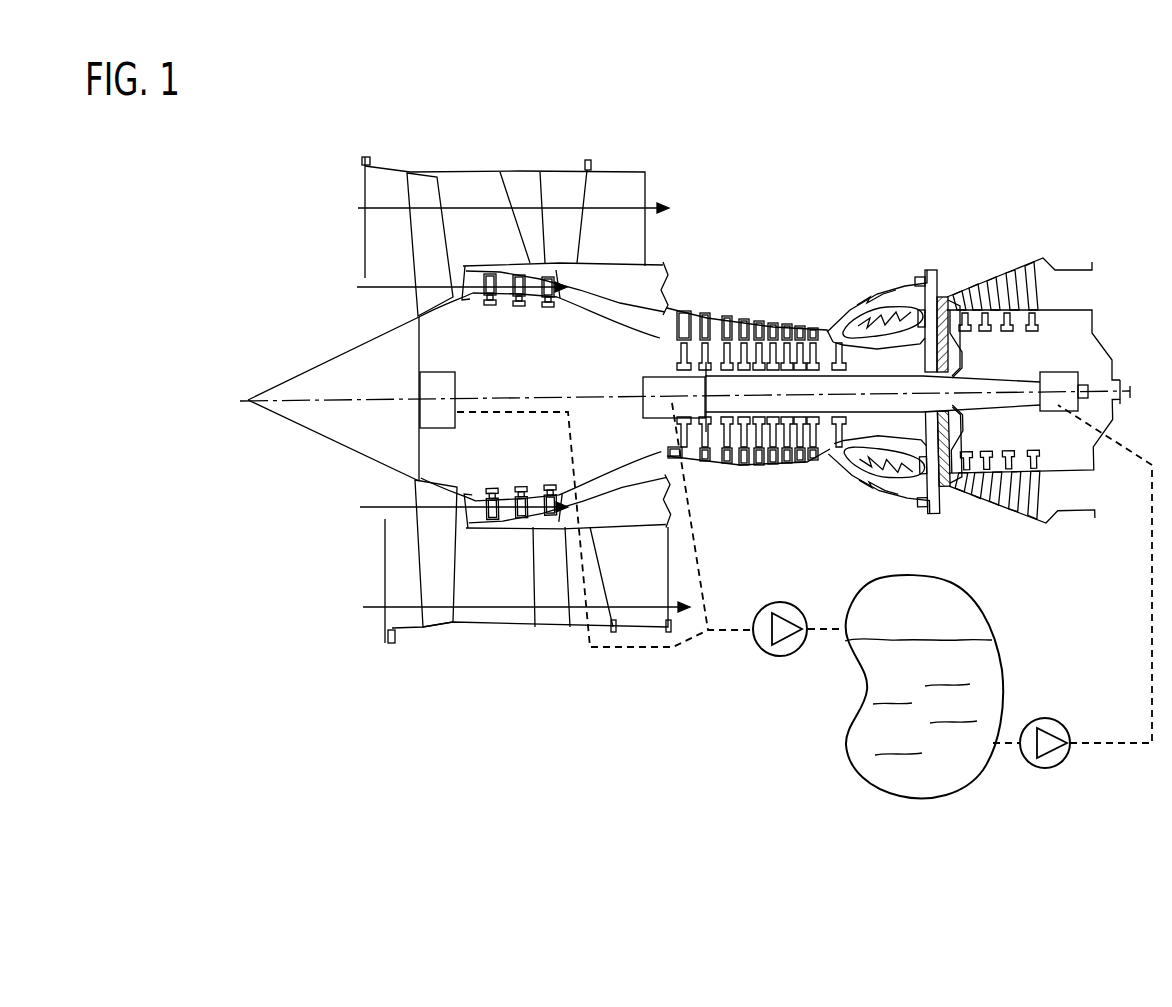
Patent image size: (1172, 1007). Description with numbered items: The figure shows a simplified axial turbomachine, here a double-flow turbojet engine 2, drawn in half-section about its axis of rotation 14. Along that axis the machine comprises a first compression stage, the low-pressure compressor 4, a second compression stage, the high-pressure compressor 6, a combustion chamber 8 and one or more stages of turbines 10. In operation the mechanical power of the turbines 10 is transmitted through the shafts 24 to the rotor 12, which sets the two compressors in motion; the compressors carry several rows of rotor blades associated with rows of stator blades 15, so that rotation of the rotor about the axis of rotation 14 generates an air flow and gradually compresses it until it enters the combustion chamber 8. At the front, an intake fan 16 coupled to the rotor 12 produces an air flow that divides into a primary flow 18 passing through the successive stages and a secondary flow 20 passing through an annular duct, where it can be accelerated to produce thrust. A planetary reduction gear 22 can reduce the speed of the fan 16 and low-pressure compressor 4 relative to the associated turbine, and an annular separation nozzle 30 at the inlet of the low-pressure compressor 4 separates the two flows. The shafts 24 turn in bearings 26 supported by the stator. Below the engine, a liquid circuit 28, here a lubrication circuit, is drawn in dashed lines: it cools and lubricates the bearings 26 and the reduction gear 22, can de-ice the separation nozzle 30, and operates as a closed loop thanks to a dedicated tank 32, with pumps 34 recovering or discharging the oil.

The turbojet engine 2 is at (822, 140).
The low-pressure compressor 4 is at (489, 303).
The high-pressure compressor 6 is at (730, 331).
The combustion chamber 8 is at (897, 290).
The turbines 10 is at (1013, 288).
The rotor 12 is at (963, 378).
The axis of rotation 14 is at (553, 397).
The stator blades 15 is at (531, 276).
The intake fan 16 is at (422, 196).
The primary flow 18 is at (448, 398).
The secondary flow 20 is at (510, 402).
The planetary reduction gear 22 is at (442, 413).
The shafts 24 is at (828, 386).
The bearings 26 is at (651, 407).
The liquid circuit 28 is at (718, 684).
The annular separation nozzle 30 is at (473, 268).
The tank 32 is at (958, 586).
The pumps 34 is at (778, 657).